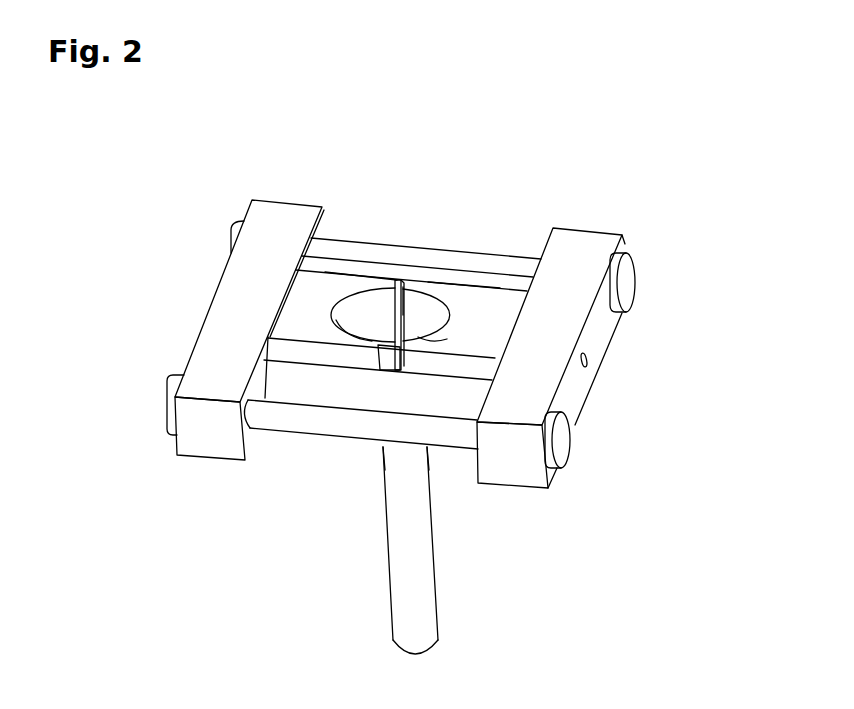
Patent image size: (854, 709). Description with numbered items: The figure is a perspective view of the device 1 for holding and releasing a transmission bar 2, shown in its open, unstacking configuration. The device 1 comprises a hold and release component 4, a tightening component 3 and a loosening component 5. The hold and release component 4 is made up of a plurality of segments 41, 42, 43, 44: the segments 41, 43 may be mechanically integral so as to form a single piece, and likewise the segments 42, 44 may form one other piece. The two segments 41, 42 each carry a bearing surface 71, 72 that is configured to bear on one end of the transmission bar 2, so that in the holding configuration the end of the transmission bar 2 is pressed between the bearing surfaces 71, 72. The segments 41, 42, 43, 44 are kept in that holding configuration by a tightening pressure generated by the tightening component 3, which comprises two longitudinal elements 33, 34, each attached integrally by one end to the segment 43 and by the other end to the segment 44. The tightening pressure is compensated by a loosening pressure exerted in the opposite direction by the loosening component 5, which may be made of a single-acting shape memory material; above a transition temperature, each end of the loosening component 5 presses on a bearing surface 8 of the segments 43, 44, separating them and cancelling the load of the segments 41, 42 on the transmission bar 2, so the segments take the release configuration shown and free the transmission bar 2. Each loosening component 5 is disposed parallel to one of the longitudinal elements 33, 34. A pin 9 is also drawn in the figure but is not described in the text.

The device 1 is at (660, 233).
The transmission bar 2 is at (415, 575).
The tightening component 3 is at (460, 422).
The hold and release component 4 is at (446, 169).
The loosening component 5 is at (362, 342).
The bearing surface 8 is at (258, 384).
The pin 9 is at (383, 358).
The longitudinal element 33 is at (395, 452).
The longitudinal element 34 is at (345, 246).
The segment 41 is at (332, 300).
The segment 42 is at (472, 306).
The segment 43 is at (200, 436).
The segment 44 is at (578, 388).
The bearing surface 71 is at (333, 307).
The bearing surface 72 is at (430, 342).